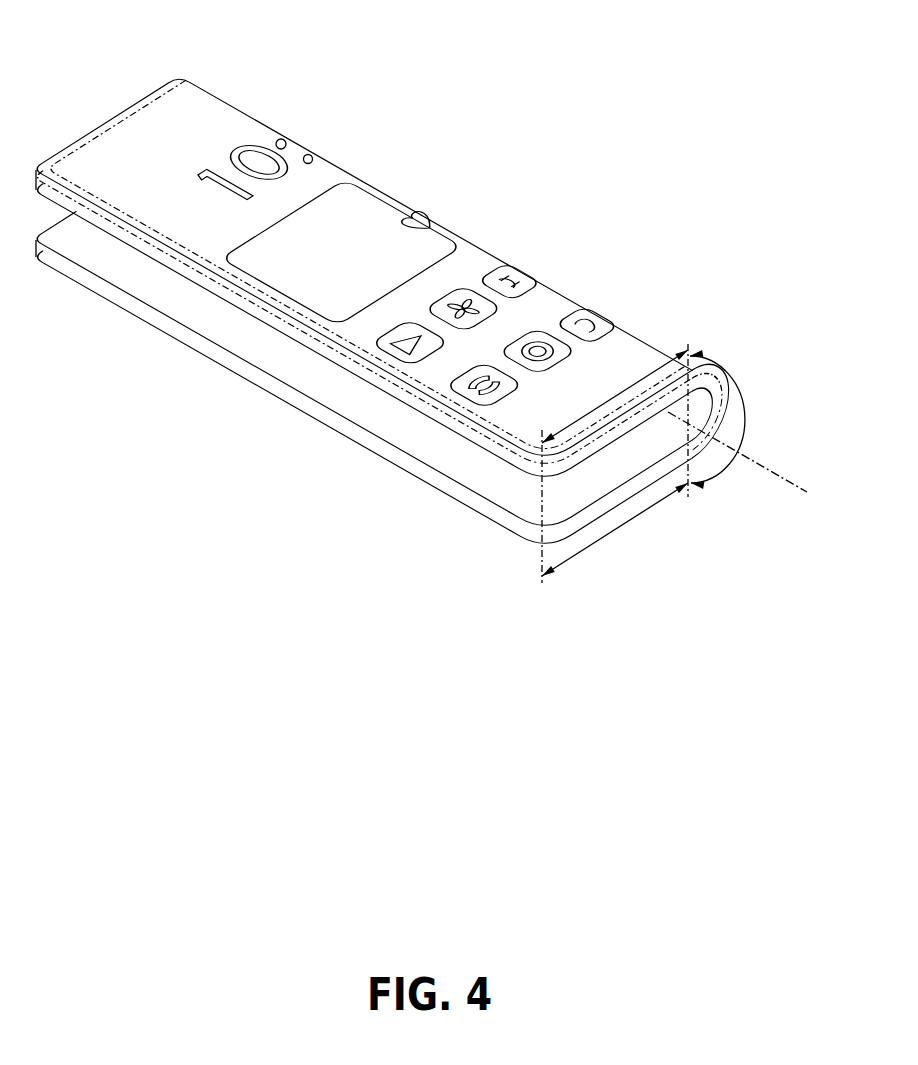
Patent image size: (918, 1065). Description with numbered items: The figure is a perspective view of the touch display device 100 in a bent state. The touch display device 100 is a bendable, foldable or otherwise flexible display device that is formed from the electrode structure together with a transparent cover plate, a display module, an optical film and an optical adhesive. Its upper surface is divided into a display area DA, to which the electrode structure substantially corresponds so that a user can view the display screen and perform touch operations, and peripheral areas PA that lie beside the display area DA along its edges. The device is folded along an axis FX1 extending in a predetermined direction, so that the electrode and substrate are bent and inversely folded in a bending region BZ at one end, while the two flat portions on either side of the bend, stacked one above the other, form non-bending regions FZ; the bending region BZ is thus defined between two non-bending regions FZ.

The touch display device 100 is at (525, 224).
The peripheral area PA is at (171, 90).
The display area DA is at (137, 150).
The non-bending region FZ is at (615, 463).
The bending region BZ is at (738, 419).
The axis FX1 is at (788, 479).